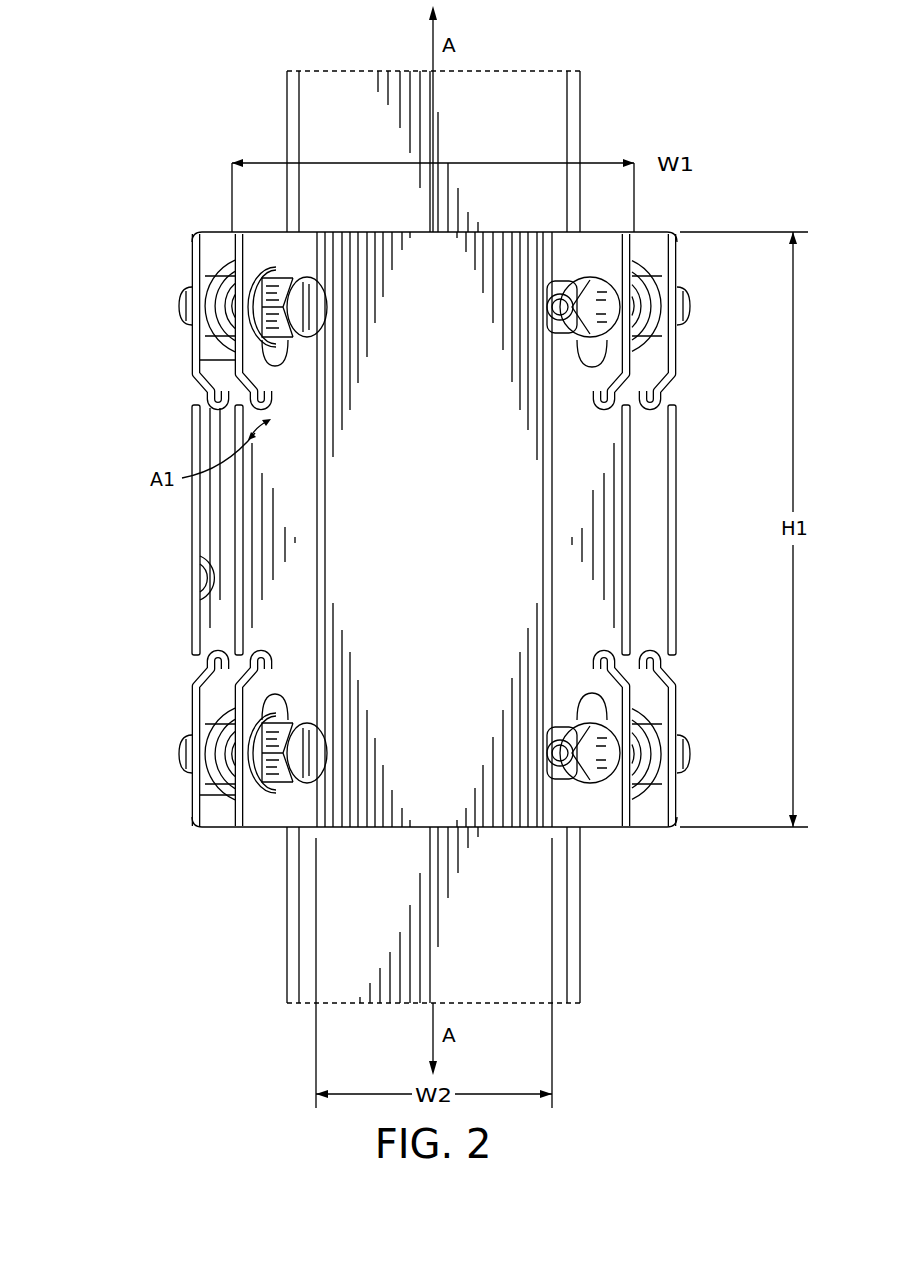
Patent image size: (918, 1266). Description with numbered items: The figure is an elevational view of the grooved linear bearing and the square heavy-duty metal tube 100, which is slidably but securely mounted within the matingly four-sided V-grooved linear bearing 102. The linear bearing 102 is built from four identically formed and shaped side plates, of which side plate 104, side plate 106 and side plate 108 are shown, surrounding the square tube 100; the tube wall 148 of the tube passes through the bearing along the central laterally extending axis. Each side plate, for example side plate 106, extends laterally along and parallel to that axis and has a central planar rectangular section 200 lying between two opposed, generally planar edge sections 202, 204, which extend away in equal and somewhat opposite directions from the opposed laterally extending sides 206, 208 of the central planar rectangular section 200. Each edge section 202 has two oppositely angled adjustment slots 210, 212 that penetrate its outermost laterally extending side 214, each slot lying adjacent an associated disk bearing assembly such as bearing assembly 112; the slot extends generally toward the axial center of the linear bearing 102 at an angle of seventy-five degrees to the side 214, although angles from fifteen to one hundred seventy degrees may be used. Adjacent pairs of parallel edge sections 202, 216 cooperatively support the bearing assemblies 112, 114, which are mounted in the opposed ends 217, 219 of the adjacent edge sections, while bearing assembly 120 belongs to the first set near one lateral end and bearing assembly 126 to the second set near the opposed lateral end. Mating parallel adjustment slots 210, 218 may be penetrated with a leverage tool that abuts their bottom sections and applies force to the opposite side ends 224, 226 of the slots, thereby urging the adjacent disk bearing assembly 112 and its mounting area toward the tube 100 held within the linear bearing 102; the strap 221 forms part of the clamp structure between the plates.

The square heavy-duty metal tube 100 is at (537, 110).
The tube wall 148 is at (290, 130).
The opposed end of edge section 217 is at (265, 257).
The bearing assembly 112 is at (183, 292).
The side end of slot 224 is at (197, 345).
The side end of slot 226 is at (203, 388).
The adjustment slot 218 is at (207, 387).
The adjustment slot 210 is at (250, 397).
The V-grooved linear bearing 102 is at (174, 329).
The strap 221 is at (240, 412).
The laterally extending side 206 is at (318, 500).
The edge section 202 is at (270, 550).
The edge section 216 is at (213, 587).
The side plate 104 is at (190, 724).
The adjustment slot 212 is at (215, 661).
The outermost laterally extending side 214 is at (192, 747).
The bearing assembly 114 is at (205, 793).
The opposed end of edge section 219 is at (275, 817).
The central planar rectangular section 200 is at (370, 830).
The side plate 106 is at (498, 830).
The bearing assembly 120 is at (688, 300).
The edge section 204 is at (598, 447).
The laterally extending side 208 is at (552, 490).
The side plate 108 is at (678, 528).
The bearing assembly 126 is at (688, 750).